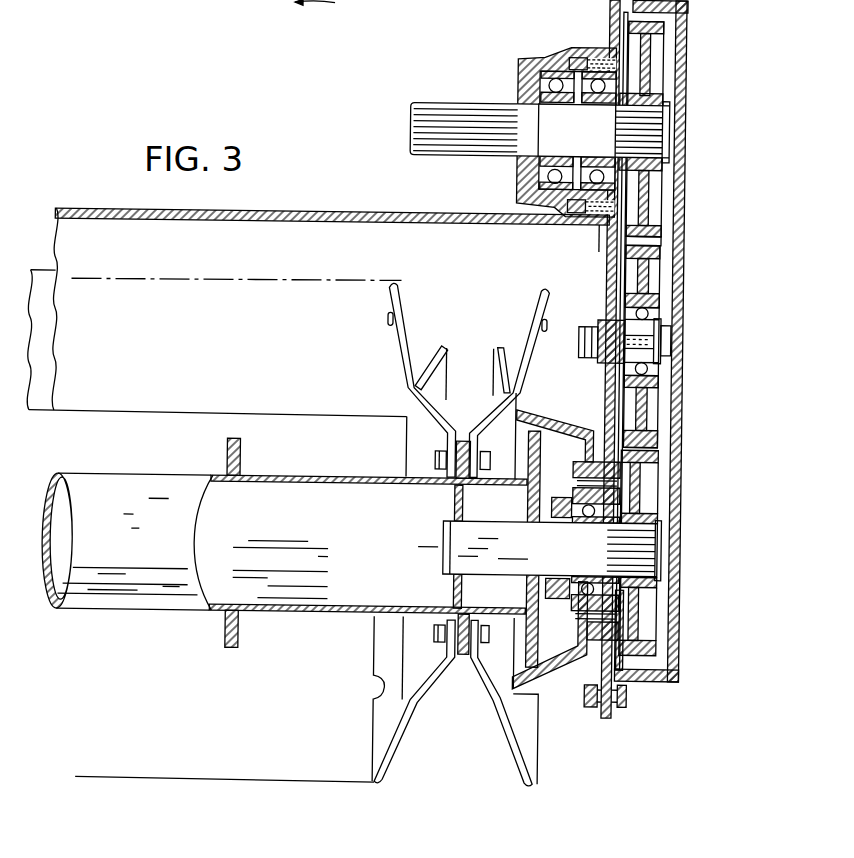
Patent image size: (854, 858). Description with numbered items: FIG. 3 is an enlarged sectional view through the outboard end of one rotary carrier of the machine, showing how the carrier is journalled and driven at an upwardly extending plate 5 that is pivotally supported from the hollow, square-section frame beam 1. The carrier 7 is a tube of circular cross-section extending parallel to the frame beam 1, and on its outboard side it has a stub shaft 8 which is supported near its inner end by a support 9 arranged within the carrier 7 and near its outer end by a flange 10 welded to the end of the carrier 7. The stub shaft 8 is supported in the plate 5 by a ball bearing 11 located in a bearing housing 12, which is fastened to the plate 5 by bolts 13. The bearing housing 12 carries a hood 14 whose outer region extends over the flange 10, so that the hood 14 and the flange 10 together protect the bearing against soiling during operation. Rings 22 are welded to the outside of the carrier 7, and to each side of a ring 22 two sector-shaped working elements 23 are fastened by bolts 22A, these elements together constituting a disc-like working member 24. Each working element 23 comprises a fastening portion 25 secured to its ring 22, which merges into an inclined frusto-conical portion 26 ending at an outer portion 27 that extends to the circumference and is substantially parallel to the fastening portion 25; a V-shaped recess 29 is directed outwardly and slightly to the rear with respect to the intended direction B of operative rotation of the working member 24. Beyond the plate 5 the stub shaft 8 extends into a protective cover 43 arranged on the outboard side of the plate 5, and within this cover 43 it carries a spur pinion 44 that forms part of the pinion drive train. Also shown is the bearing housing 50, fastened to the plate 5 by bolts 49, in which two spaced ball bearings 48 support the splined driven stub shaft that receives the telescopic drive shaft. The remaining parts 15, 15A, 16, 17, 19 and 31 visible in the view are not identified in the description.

The frame beam 1 is at (43, 362).
The plate 5 is at (626, 4).
The carrier 7 is at (128, 449).
The stub shaft 8 is at (460, 545).
The support 9 is at (454, 502).
The flange 10 is at (528, 499).
The ball bearing 11 is at (571, 546).
The bearing housing 12 is at (562, 605).
The bolts 13 is at (621, 495).
The hood 14 is at (571, 426).
The pulley 15 is at (657, 73).
The input shaft 15A is at (420, 106).
The idler pulley 16 is at (640, 273).
The bolt 17 is at (613, 325).
The bolt 19 is at (593, 249).
The ring 22 is at (242, 452).
The bolts 22A is at (436, 462).
The working element 23 is at (382, 341).
The working member 24 is at (349, 797).
The fastening portion 25 is at (228, 2).
The frusto-conical portion 26 is at (500, 409).
The outer portion 27 is at (387, 361).
The V-shaped recess 29 is at (386, 313).
The tube wall 31 is at (314, 192).
The protective cover 43 is at (673, 575).
The spur pinion 44 is at (630, 477).
The ball bearings 48 is at (578, 112).
The bolts 49 is at (588, 57).
The bearing housing 50 is at (539, 40).
The direction of operative rotation B is at (322, 2).